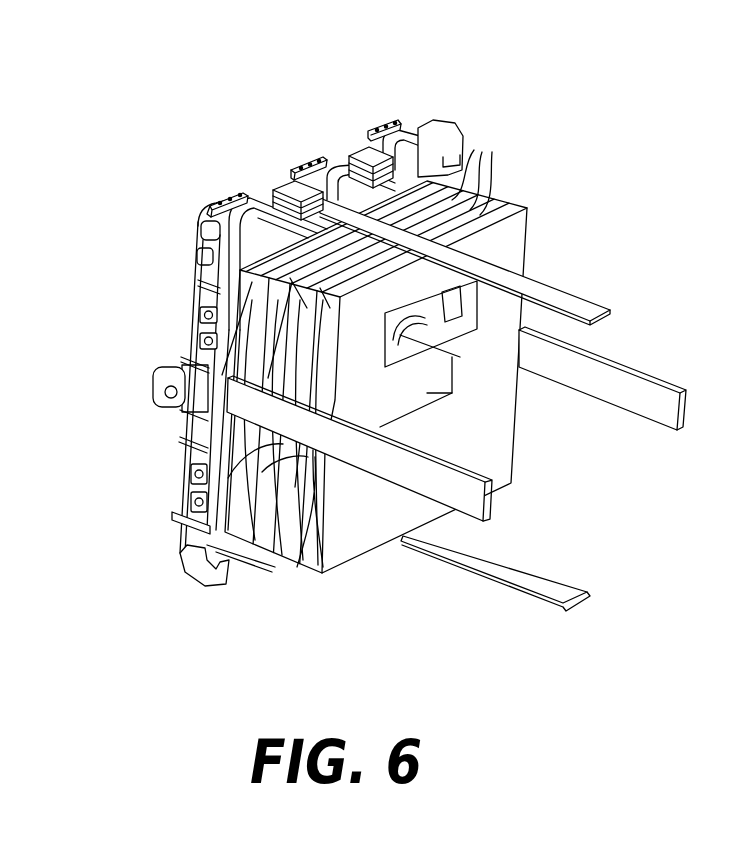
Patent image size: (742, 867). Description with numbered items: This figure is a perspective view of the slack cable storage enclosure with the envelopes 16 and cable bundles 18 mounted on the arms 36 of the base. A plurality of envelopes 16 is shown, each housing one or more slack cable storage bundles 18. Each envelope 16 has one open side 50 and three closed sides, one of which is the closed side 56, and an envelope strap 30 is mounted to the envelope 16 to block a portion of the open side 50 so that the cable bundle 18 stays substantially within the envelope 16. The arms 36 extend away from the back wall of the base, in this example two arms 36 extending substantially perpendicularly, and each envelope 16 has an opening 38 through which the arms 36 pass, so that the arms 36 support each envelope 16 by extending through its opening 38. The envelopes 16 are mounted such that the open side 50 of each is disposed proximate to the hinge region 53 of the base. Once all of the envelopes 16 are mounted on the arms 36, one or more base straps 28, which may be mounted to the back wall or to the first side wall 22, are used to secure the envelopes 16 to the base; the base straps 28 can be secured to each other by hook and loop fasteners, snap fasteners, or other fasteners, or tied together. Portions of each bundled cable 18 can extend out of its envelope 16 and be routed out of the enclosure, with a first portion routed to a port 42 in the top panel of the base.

The envelope 16 is at (422, 165).
The slack cable storage bundle 18 is at (165, 373).
The first side wall 22 is at (197, 447).
The base strap 28 is at (555, 298).
The envelope strap 30 is at (445, 392).
The arm 36 is at (490, 292).
The opening 38 is at (440, 340).
The port 42 is at (229, 203).
The open side 50 is at (289, 275).
The hinge region 53 is at (200, 346).
The closed side 56 is at (473, 174).